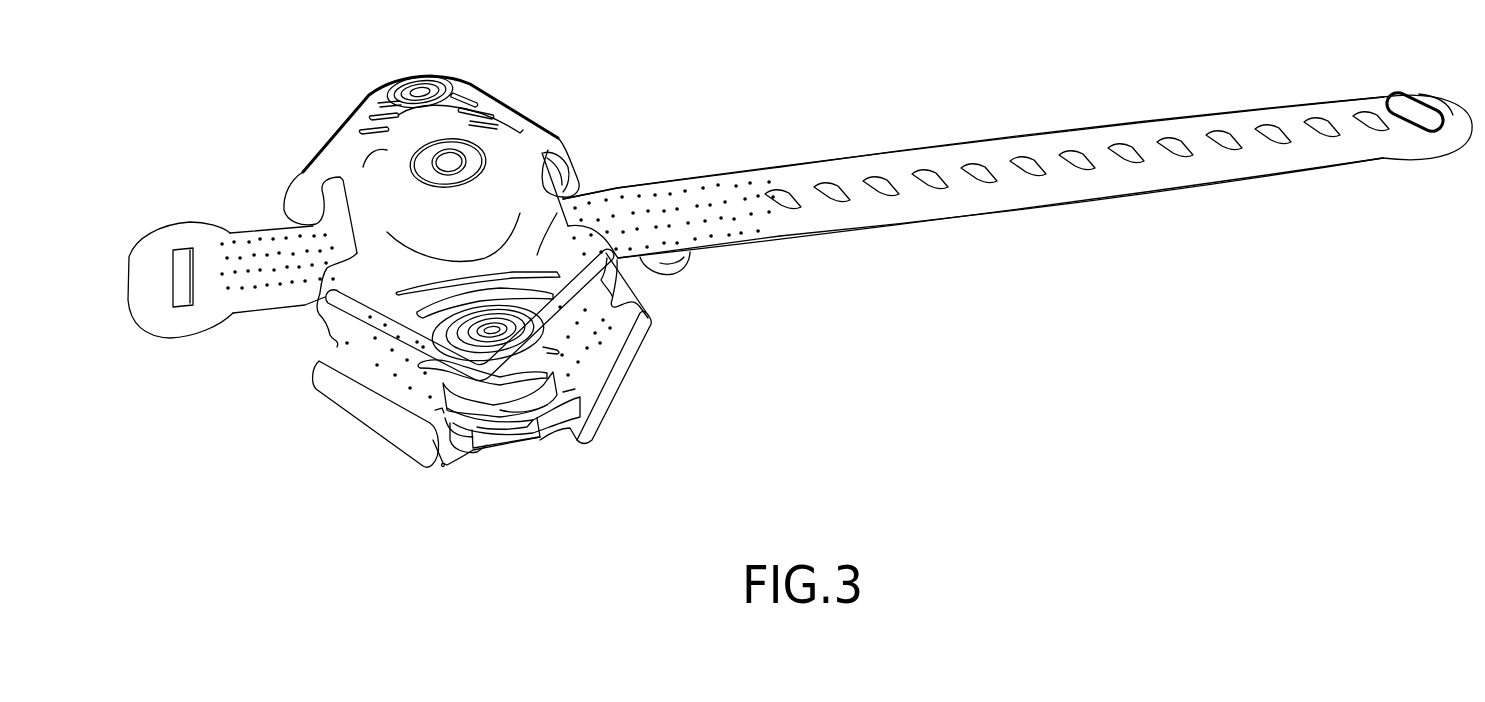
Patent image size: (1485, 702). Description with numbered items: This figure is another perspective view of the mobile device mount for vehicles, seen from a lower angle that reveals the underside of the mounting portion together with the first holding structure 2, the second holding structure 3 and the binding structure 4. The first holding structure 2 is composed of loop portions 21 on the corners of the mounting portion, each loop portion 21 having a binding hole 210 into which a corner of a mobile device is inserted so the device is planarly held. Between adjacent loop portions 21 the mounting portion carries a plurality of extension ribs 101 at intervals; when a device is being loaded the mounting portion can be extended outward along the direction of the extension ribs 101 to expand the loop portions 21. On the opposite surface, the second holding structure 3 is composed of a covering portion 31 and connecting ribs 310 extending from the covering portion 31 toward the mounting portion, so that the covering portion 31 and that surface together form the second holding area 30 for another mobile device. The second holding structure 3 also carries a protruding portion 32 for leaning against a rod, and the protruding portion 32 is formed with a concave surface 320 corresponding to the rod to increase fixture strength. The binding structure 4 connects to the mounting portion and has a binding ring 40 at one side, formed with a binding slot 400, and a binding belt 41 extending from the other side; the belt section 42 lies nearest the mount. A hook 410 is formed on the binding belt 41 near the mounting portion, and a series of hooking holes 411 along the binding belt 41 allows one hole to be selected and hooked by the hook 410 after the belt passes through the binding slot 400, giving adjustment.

The first holding structure 2 is at (345, 413).
The loop portion 21 is at (455, 425).
The binding hole 210 is at (337, 385).
The second holding structure 3 is at (493, 88).
The second holding area 30 is at (394, 331).
The covering portion 31 is at (568, 202).
The protruding portion 32 is at (387, 150).
The connecting rib 310 is at (620, 253).
The concave surface 320 is at (450, 139).
The binding structure 4 is at (1038, 132).
The binding ring 40 is at (148, 267).
The binding slot 400 is at (185, 263).
The binding belt 41 is at (1200, 130).
The hook 410 is at (683, 267).
The hooking hole 411 is at (1279, 131).
The textured strap section 42 is at (660, 182).
The extension rib 101 is at (507, 407).